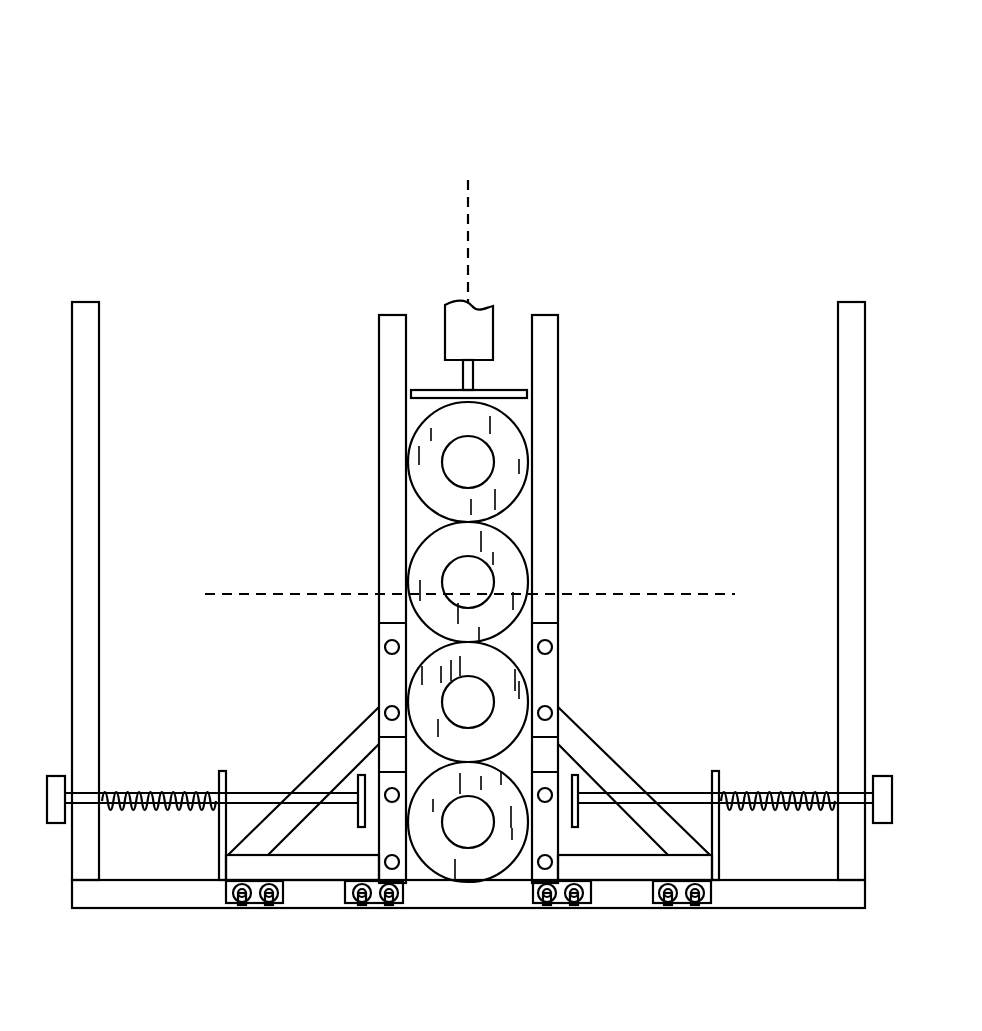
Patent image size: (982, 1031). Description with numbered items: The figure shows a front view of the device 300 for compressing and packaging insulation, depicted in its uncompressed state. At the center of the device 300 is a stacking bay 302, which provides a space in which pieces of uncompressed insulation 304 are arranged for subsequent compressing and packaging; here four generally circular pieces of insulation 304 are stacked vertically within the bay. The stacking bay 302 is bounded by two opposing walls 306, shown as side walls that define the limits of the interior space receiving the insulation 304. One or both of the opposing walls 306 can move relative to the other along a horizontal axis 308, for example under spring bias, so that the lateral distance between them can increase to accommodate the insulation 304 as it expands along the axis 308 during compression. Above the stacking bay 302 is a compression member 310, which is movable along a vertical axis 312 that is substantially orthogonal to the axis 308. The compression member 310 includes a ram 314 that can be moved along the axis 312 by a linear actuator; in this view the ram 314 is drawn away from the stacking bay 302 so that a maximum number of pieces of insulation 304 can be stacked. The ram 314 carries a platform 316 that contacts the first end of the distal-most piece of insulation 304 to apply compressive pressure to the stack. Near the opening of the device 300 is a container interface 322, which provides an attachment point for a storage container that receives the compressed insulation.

The device 300 is at (118, 116).
The stacking bay 302 is at (402, 513).
The uncompressed insulation 304 is at (410, 458).
The opposing walls 306 is at (378, 328).
The axis 308 is at (220, 592).
The compression member 310 is at (401, 240).
The axis 312 is at (467, 180).
The ram 314 is at (473, 308).
The platform 316 is at (491, 389).
The container interface 322 is at (379, 685).